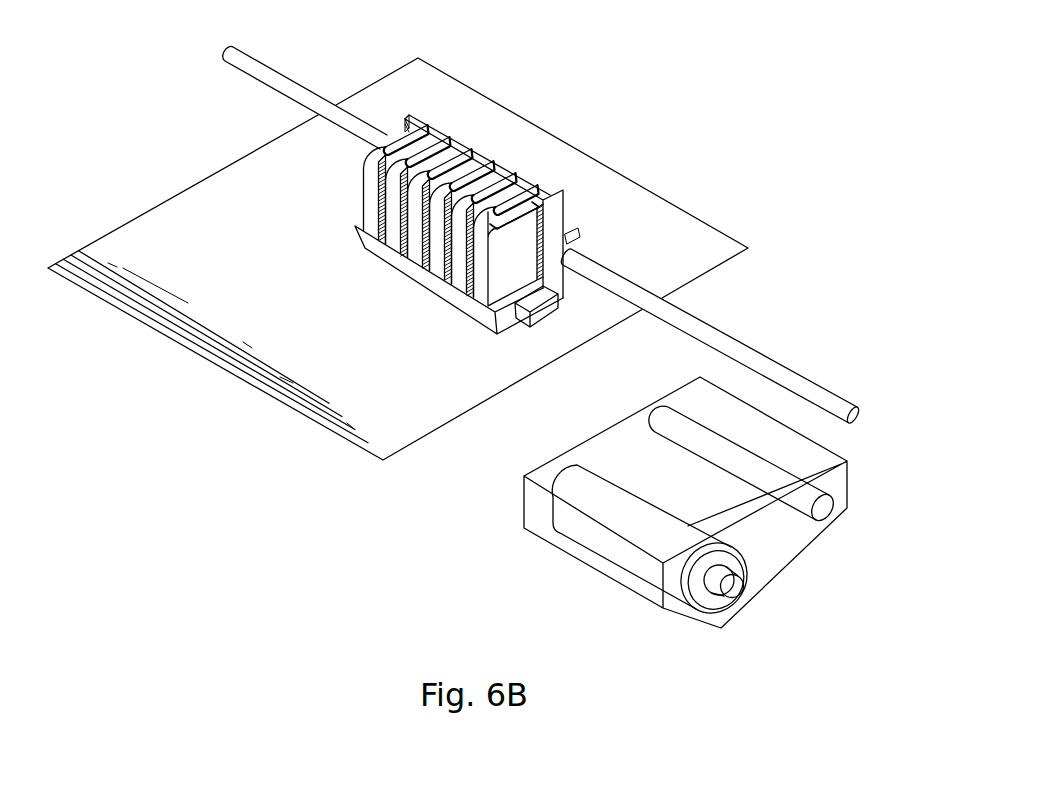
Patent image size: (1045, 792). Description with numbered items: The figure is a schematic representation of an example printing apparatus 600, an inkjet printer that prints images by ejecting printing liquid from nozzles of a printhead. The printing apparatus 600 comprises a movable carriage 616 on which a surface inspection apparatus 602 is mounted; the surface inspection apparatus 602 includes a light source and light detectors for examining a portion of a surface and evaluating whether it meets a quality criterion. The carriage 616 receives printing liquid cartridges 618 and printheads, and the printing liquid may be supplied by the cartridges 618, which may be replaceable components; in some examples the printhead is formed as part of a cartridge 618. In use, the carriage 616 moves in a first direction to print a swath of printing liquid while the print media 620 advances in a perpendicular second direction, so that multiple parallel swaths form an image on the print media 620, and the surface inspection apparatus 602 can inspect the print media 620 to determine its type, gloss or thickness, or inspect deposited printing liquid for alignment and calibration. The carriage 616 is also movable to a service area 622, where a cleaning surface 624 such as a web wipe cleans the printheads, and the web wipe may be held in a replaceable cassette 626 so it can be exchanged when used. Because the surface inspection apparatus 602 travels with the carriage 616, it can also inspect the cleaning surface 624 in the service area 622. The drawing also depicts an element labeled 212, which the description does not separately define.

The printing apparatus 600 is at (128, 62).
The heat pipe / rod 212 is at (800, 82).
The movable carriage 616 is at (553, 213).
The printing liquid cartridges 618 is at (487, 172).
The surface inspection apparatus 602 is at (540, 317).
The print media 620 is at (382, 430).
The service area 622 is at (878, 342).
The cleaning surface 624 is at (633, 448).
The replaceable cassette 626 is at (797, 560).